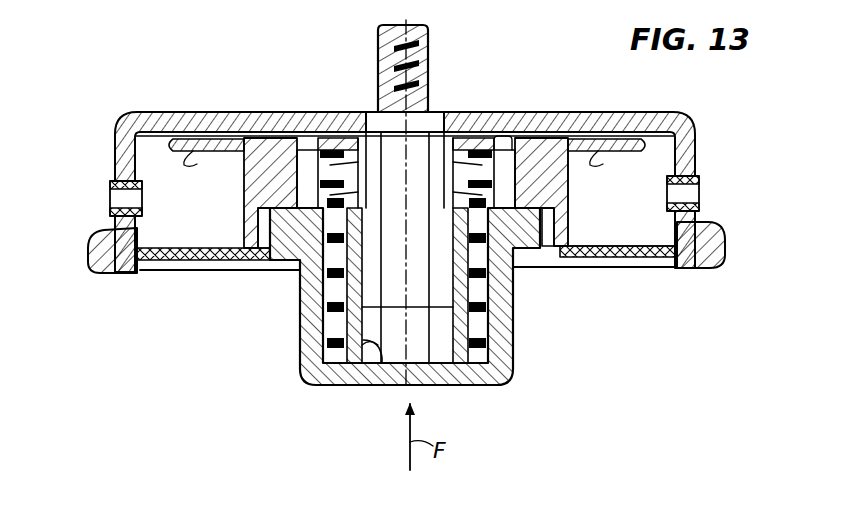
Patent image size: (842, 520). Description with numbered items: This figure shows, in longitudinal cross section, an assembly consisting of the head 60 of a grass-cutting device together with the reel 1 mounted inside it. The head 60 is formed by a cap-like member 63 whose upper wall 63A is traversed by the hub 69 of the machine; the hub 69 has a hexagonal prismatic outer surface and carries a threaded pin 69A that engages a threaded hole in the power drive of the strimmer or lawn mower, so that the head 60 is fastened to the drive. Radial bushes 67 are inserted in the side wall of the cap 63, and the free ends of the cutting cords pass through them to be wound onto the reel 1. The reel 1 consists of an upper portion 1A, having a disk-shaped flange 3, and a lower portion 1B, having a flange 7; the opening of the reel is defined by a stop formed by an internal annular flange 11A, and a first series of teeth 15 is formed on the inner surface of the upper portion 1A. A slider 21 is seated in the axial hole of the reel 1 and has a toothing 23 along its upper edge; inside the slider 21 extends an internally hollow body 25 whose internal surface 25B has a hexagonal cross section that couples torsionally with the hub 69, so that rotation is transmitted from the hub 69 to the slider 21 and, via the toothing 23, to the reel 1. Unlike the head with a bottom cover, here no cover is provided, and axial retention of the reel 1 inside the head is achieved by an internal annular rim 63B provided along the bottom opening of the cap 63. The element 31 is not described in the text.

The reel 1 is at (651, 158).
The upper portion of the reel 1A is at (599, 148).
The lower portion of the reel 1B is at (608, 240).
The disk-shaped flange 3 is at (193, 150).
The flange 7 is at (188, 264).
The internal annular flange 11A is at (506, 112).
The first series of teeth 15 is at (318, 138).
The slider 21 is at (313, 392).
The toothing 23 is at (270, 262).
The internally hollow body 25 is at (342, 295).
The internal surface with hexagonal cross section 25B is at (372, 386).
The seat 31 is at (330, 330).
The head of the grass-cutting device 60 is at (731, 250).
The cap-like member 63 is at (113, 147).
The upper wall of the cap 63A is at (266, 112).
The internal annular rim 63B is at (146, 270).
The radial bushes 67 is at (110, 184).
The hub 69 is at (441, 150).
The threaded pin 69A is at (430, 62).